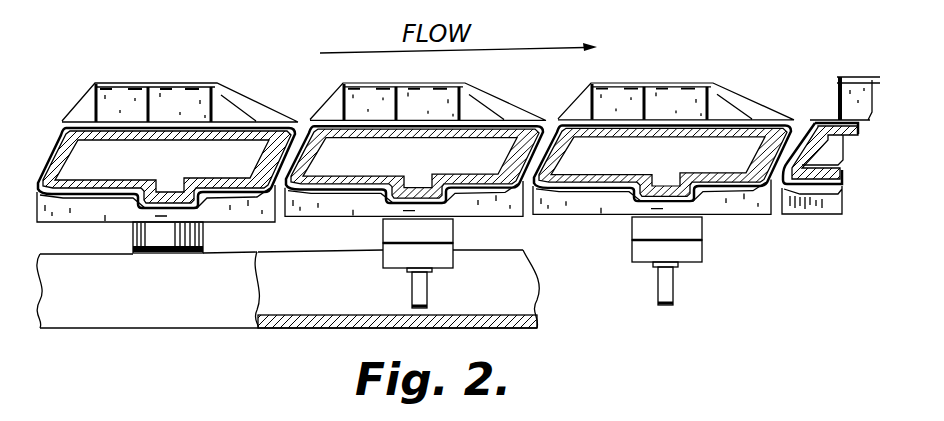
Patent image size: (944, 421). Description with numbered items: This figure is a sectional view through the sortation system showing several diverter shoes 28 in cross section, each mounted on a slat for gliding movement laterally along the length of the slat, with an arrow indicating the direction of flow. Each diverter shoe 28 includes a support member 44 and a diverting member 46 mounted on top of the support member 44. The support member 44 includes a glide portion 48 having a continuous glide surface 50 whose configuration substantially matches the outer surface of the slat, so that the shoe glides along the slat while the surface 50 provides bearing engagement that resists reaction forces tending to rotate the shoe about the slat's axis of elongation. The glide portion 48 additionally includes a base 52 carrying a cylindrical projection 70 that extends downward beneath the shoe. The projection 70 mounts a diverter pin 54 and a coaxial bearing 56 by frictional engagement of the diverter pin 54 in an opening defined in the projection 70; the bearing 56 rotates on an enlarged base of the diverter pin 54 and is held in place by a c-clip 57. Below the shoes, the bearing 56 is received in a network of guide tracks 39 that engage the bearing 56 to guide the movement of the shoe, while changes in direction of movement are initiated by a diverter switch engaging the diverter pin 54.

The diverter shoe 28 is at (758, 84).
The diverting member 46 is at (603, 82).
The glide portion 48 is at (797, 137).
The continuous glide surface 50 is at (594, 188).
The support member 44 is at (553, 218).
The base 52 is at (732, 218).
The cylindrical projection 70 is at (633, 233).
The bearing 56 is at (453, 268).
The c-clip 57 is at (678, 267).
The diverter pin 54 is at (673, 288).
The guide tracks 39 is at (208, 330).